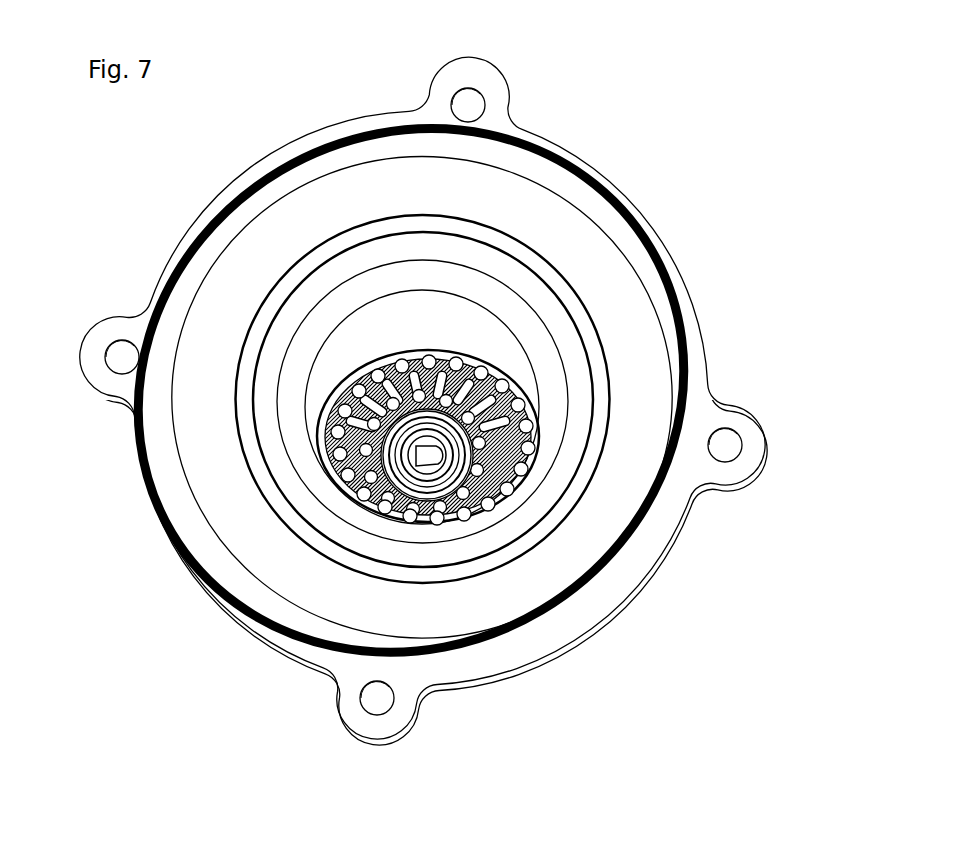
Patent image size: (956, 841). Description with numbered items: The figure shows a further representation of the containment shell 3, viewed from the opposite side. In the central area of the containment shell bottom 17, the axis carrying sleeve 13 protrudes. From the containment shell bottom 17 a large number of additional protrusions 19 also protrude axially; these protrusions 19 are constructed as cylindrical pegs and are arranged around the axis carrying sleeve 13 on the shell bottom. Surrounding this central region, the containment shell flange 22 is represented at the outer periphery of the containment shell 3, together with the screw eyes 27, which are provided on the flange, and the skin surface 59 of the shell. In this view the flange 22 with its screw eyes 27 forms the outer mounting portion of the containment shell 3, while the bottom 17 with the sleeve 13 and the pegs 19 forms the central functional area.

The containment shell 3 is at (712, 198).
The axis carrying sleeve 13 is at (458, 466).
The containment shell bottom 17 is at (345, 448).
The protrusions 19 is at (487, 383).
The containment shell flange 22 is at (212, 245).
The screw eyes 27 is at (470, 104).
The skin surface 59 is at (377, 318).